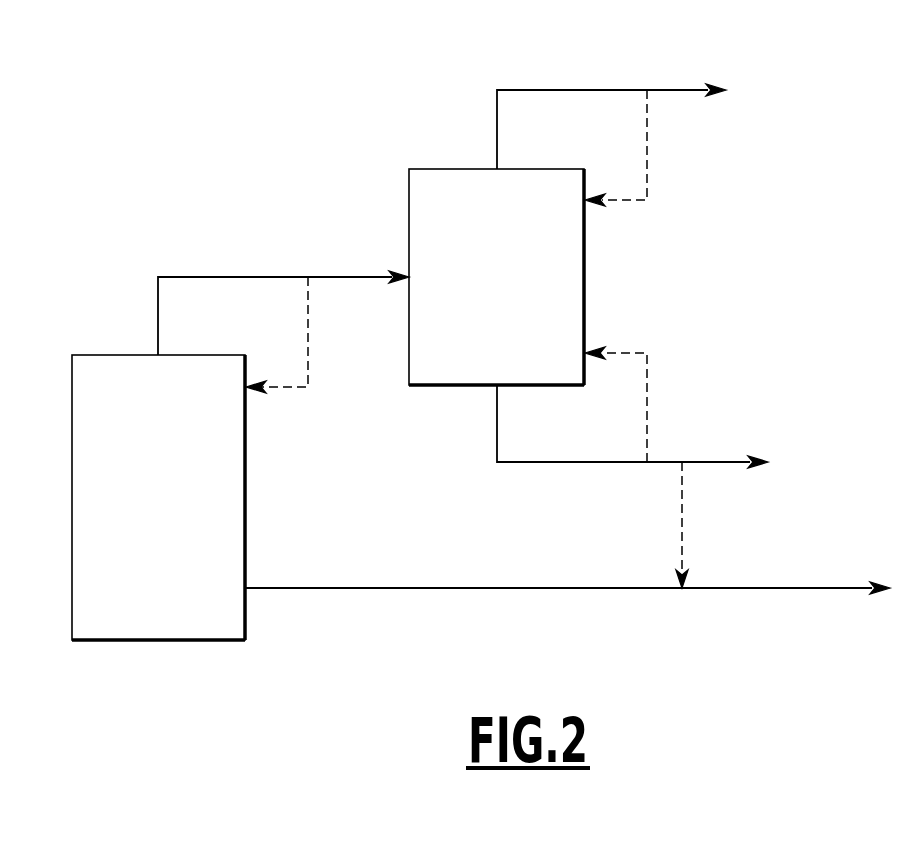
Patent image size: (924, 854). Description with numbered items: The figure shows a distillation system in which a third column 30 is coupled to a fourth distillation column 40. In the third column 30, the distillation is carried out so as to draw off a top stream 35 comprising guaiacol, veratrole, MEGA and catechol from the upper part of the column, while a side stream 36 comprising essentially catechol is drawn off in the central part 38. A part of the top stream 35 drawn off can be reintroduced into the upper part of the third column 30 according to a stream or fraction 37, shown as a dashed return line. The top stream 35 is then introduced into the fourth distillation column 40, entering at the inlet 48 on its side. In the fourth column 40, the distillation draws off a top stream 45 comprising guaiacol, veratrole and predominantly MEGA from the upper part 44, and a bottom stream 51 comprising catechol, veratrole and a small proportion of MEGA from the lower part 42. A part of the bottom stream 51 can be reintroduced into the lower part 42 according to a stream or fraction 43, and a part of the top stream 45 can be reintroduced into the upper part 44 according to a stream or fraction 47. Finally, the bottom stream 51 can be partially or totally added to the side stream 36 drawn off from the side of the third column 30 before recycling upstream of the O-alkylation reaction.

The third column 30 is at (158, 497).
The fourth distillation column 40 is at (496, 277).
The top stream 35 is at (331, 276).
The side stream 36 is at (848, 587).
The stream or fraction 37 is at (310, 353).
The central part 38 is at (277, 562).
The lower part 42 is at (452, 408).
The stream or fraction 43 is at (649, 383).
The upper part 44 is at (538, 146).
The top stream 45 is at (688, 90).
The stream or fraction 47 is at (650, 168).
The inlet of unit 40 48 is at (392, 238).
The bottom stream 51 is at (730, 463).